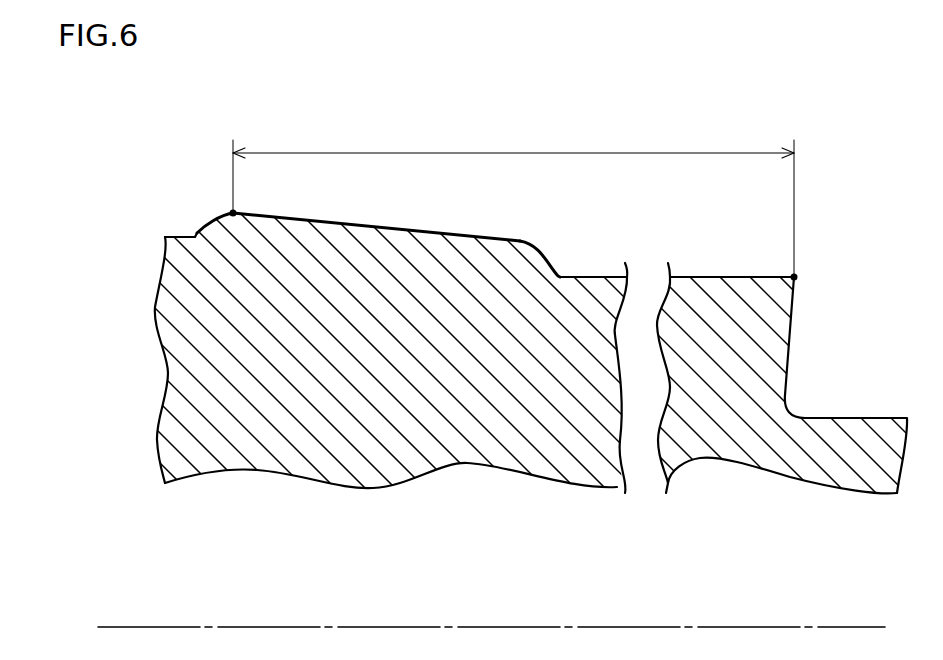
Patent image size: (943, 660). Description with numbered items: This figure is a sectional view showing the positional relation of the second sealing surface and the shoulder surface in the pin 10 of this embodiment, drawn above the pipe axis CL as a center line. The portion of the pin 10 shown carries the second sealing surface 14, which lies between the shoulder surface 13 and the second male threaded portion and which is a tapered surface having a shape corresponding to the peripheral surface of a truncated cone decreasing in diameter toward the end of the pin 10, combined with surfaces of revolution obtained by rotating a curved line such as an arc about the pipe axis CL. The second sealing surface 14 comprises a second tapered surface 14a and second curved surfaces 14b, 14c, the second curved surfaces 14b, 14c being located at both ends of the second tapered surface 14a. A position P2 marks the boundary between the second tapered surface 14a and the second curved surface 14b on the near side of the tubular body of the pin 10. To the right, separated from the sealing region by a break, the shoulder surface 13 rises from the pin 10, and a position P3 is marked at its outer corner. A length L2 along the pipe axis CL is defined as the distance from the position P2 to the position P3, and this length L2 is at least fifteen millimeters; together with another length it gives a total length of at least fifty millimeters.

The pin 10 is at (181, 511).
The shoulder surface 13 is at (790, 340).
The second sealing surface 14 is at (378, 413).
The second tapered surface 14a is at (385, 229).
The second curved surface 14b is at (215, 219).
The second curved surface 14c is at (545, 262).
The position P2 is at (233, 213).
The position P3 is at (794, 277).
The length L2 is at (513, 202).
The pipe axis CL is at (506, 625).